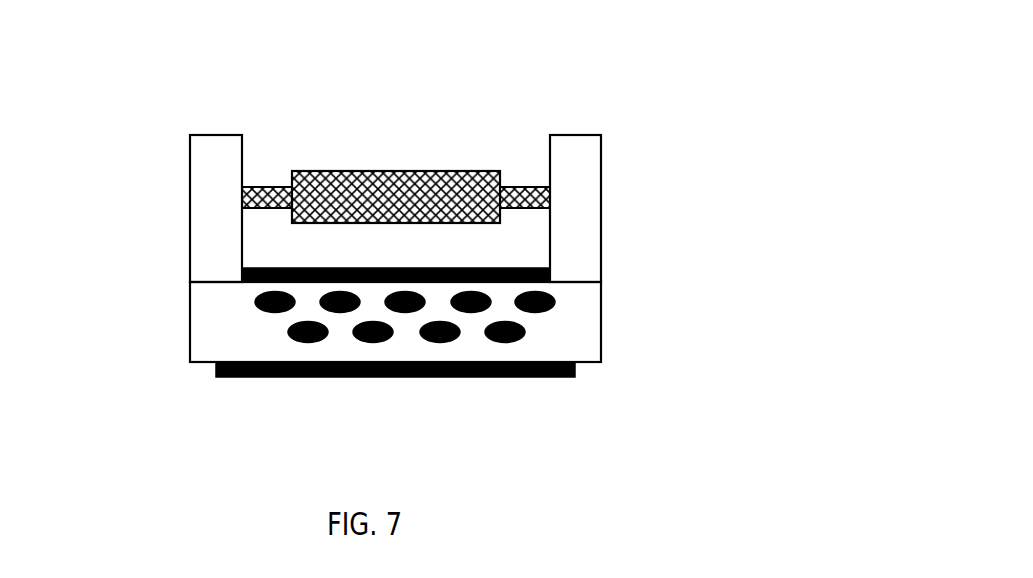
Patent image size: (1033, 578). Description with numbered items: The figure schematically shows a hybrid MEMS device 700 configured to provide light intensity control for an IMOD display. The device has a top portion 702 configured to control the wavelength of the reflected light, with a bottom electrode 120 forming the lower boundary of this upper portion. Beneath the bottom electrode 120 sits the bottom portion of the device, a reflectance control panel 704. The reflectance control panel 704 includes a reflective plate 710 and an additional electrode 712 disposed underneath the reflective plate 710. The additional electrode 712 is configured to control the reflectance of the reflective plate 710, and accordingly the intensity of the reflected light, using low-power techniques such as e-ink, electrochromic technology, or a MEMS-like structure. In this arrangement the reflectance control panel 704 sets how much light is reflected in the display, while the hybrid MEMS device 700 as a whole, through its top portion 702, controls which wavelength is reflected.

The hybrid MEMS device 700 is at (611, 70).
The top portion 702 is at (591, 179).
The reflectance control panel 704 is at (190, 322).
The bottom electrode 120 is at (560, 273).
The reflective plate 710 is at (577, 326).
The additional electrode 712 is at (550, 378).